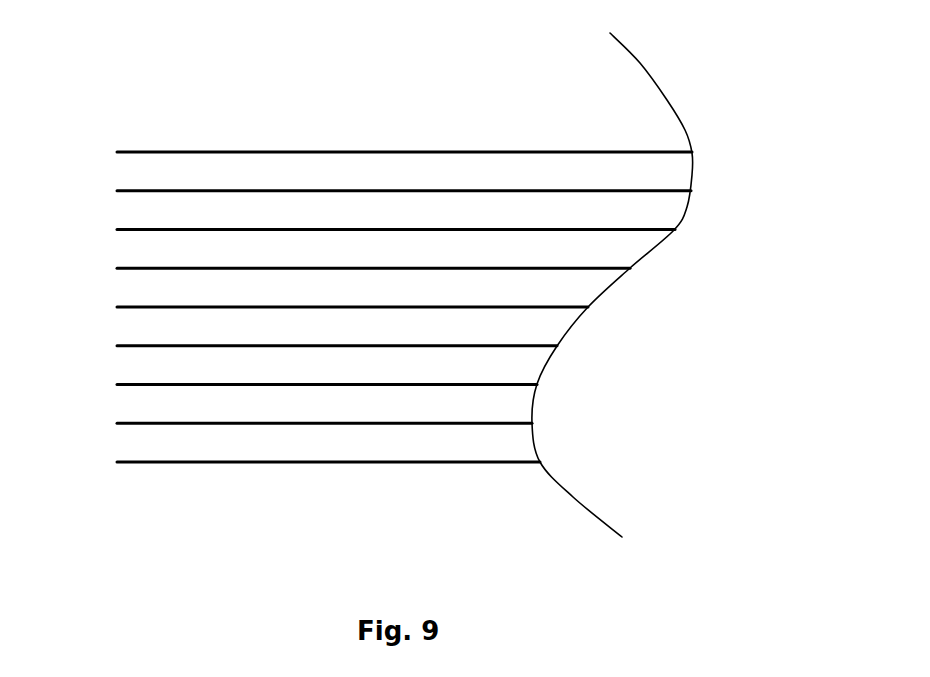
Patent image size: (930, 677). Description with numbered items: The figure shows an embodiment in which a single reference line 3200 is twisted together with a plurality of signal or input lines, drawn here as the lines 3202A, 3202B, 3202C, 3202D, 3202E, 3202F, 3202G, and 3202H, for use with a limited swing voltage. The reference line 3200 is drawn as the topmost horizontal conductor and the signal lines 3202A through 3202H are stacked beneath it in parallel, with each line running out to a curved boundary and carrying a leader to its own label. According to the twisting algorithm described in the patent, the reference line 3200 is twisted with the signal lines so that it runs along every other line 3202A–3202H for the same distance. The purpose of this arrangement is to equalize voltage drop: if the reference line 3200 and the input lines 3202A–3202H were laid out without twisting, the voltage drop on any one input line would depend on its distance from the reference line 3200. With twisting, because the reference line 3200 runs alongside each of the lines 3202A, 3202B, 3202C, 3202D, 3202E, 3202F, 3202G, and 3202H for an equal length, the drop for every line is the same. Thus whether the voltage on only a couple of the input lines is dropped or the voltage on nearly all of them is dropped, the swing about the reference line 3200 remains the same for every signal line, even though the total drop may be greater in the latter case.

The reference line 3200 is at (403, 152).
The signal line 3202A is at (620, 190).
The signal line 3202B is at (647, 228).
The signal line 3202C is at (592, 268).
The signal line 3202D is at (582, 308).
The signal line 3202E is at (503, 344).
The signal line 3202F is at (508, 382).
The signal line 3202G is at (467, 422).
The signal line 3202H is at (399, 465).